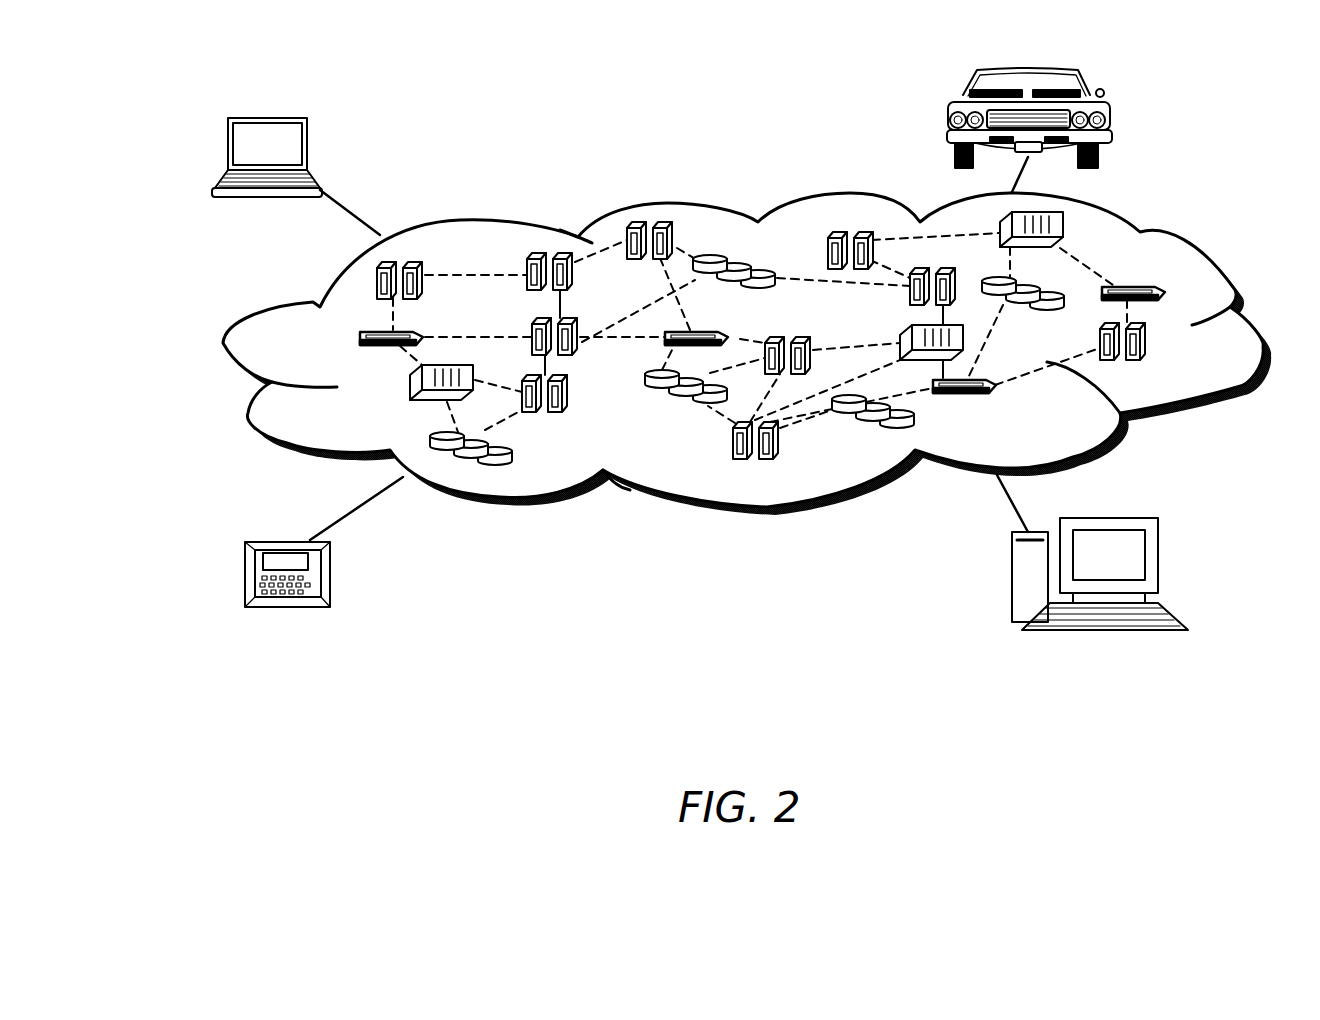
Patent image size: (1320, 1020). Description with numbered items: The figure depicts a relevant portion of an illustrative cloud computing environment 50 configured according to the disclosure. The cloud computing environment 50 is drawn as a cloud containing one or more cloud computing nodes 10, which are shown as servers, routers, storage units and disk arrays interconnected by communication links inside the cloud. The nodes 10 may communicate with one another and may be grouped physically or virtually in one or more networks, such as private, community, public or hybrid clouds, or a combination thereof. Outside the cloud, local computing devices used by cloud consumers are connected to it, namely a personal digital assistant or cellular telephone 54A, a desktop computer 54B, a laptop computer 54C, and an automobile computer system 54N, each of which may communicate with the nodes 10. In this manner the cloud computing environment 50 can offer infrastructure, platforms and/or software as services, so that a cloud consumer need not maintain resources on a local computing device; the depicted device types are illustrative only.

The cloud computing node 10 is at (290, 414).
The cloud computing environment 50 is at (716, 513).
The personal digital assistant or cellular telephone 54A is at (247, 575).
The desktop computer 54B is at (1012, 568).
The laptop computer 54C is at (240, 119).
The automobile computer system 54N is at (946, 108).